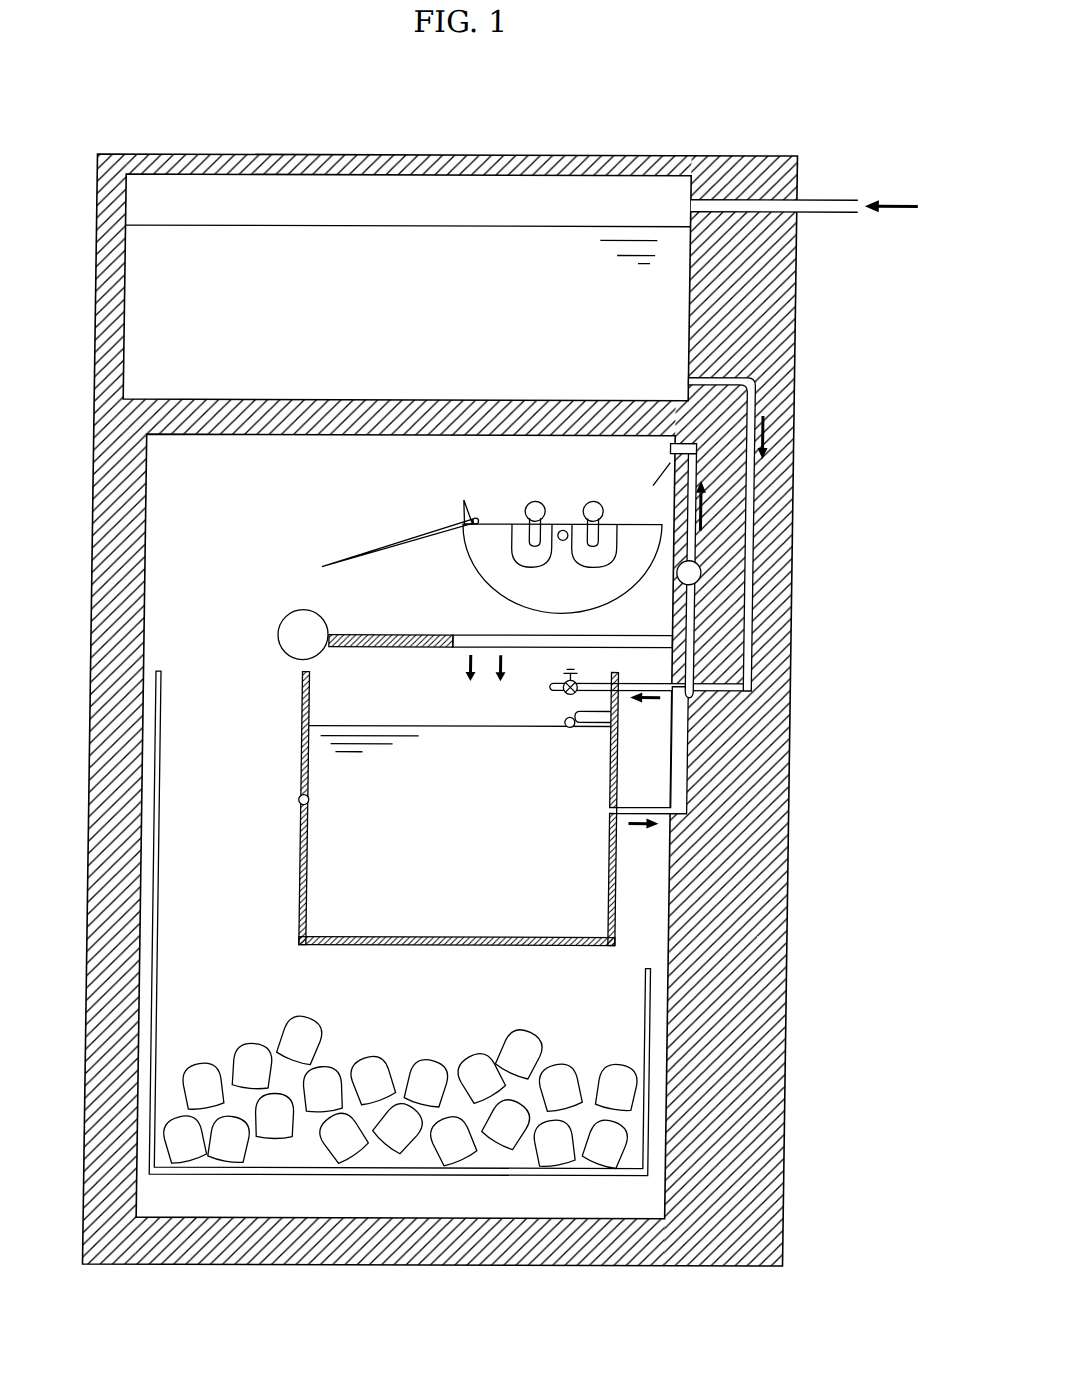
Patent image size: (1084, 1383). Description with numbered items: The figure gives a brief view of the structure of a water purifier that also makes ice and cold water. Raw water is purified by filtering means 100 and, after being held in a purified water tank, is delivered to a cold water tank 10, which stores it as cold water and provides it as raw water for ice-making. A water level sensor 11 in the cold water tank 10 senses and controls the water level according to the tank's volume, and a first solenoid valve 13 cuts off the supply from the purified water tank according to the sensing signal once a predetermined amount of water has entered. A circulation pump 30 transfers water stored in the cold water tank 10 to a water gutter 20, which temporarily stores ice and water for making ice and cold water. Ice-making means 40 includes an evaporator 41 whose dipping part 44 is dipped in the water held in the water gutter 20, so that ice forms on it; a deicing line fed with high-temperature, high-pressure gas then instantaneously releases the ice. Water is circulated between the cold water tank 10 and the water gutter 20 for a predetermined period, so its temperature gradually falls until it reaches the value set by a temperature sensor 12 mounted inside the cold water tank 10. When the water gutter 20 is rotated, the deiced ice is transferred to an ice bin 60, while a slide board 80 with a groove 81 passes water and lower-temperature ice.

The filtering means 100 is at (300, 197).
The cold water tank 10 is at (304, 862).
The water level sensor 11 is at (573, 727).
The temperature sensor 12 is at (304, 800).
The first solenoid valve 13 is at (560, 690).
The water gutter 20 is at (472, 633).
The circulation pump 30 is at (705, 563).
The ice-making means 40 is at (527, 484).
The evaporator 41 is at (584, 505).
The dipping part 44 is at (595, 537).
The ice bin 60 is at (476, 1176).
The slide board 80 is at (349, 633).
The groove 81 is at (339, 635).